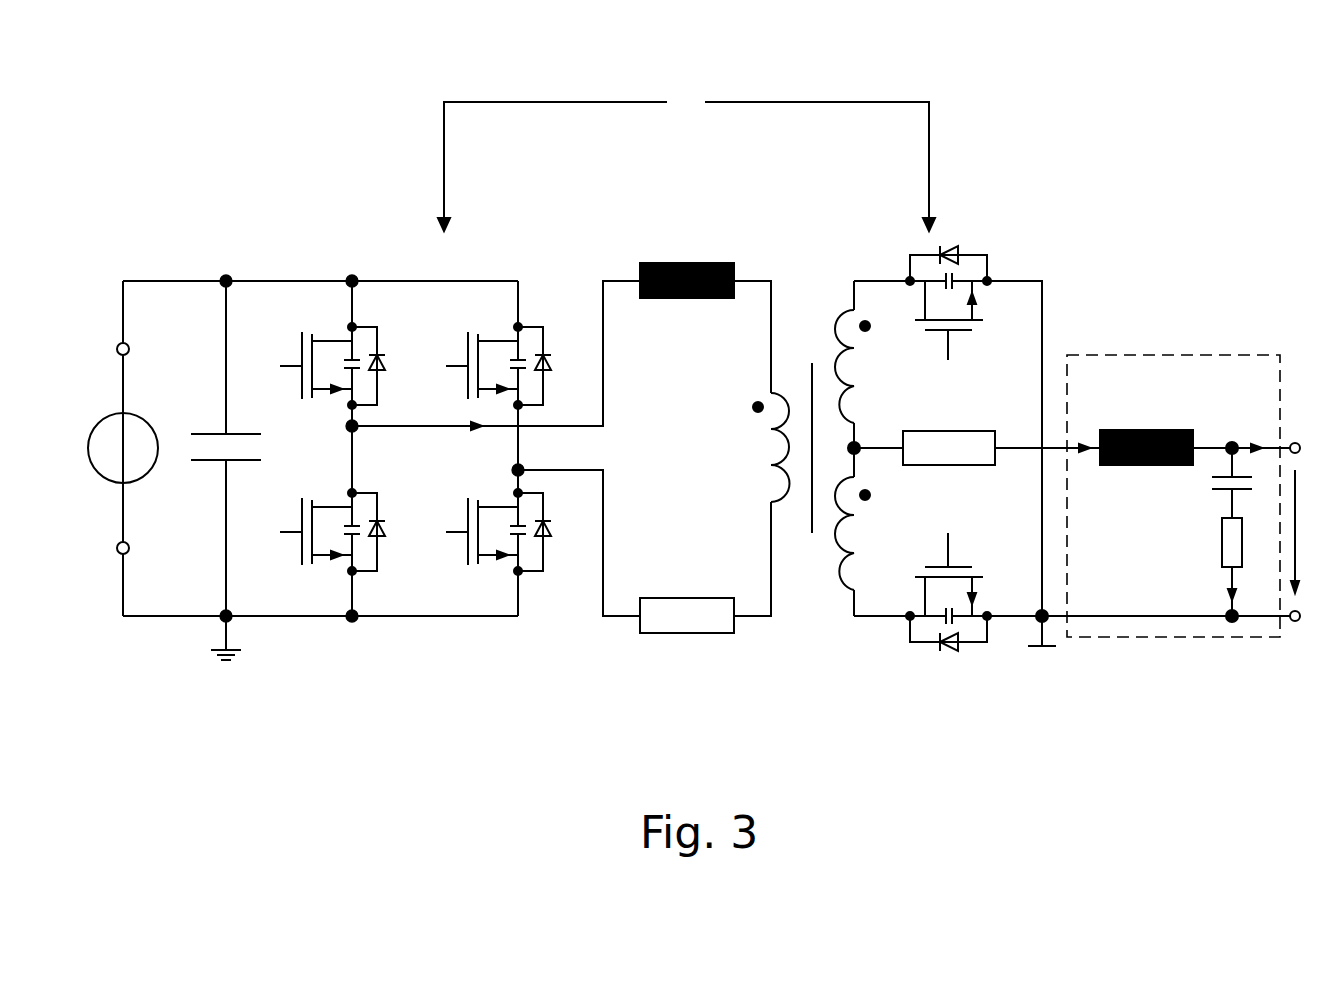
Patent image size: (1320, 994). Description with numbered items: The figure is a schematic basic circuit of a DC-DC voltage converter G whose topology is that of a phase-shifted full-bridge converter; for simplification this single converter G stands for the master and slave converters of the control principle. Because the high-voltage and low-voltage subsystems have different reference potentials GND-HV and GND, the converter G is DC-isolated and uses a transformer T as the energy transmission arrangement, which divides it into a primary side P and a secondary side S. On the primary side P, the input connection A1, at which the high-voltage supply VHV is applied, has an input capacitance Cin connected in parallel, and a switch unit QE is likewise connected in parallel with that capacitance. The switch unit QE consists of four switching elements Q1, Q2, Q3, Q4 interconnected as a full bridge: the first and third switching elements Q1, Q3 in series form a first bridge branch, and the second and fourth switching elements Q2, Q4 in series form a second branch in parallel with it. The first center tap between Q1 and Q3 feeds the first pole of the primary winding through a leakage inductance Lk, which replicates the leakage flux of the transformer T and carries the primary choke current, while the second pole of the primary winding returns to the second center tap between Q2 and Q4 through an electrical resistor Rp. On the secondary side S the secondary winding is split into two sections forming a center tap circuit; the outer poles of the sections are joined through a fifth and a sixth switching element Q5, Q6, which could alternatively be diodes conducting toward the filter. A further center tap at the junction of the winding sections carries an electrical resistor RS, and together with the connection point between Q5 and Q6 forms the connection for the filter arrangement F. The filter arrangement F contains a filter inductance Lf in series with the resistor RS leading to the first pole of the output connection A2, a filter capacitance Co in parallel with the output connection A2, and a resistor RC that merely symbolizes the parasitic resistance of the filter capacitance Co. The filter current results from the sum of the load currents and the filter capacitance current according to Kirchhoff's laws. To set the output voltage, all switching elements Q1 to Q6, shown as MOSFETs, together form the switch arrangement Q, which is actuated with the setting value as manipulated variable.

The input connection A1 is at (100, 534).
The high voltage source VHV is at (100, 448).
The input capacitance Cin is at (245, 448).
The reference potential of the high-voltage subsystem GND-HV is at (252, 663).
The switch unit QE is at (404, 381).
The first switching element Q1 is at (321, 366).
The second switching element Q2 is at (487, 366).
The third switching element Q3 is at (321, 532).
The fourth switching element Q4 is at (487, 532).
The primary side P is at (561, 523).
The leakage inductance Lk is at (687, 301).
The electrical resistor Rp is at (687, 597).
The transformer T is at (812, 640).
The secondary side S is at (974, 520).
The fifth switching element Q5 is at (948, 310).
The sixth switching element Q6 is at (948, 590).
The electrical resistor RS is at (977, 430).
The reference potential of the low-voltage subsystem GND is at (1044, 668).
The filter arrangement F is at (1191, 450).
The filter inductance Lf is at (1146, 430).
The filter capacitance Co is at (1245, 484).
The parasitic resistor RC is at (1246, 542).
The output connection A2 is at (1291, 652).
The switch arrangement Q is at (686, 160).
The converter G is at (1064, 160).